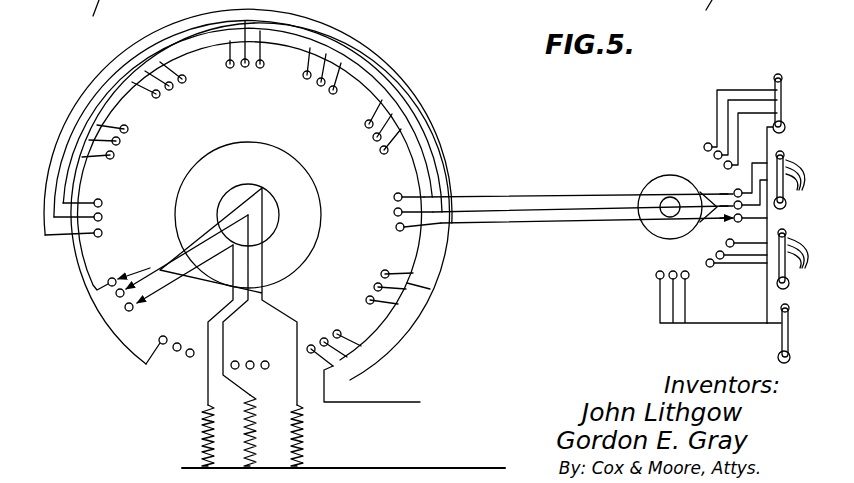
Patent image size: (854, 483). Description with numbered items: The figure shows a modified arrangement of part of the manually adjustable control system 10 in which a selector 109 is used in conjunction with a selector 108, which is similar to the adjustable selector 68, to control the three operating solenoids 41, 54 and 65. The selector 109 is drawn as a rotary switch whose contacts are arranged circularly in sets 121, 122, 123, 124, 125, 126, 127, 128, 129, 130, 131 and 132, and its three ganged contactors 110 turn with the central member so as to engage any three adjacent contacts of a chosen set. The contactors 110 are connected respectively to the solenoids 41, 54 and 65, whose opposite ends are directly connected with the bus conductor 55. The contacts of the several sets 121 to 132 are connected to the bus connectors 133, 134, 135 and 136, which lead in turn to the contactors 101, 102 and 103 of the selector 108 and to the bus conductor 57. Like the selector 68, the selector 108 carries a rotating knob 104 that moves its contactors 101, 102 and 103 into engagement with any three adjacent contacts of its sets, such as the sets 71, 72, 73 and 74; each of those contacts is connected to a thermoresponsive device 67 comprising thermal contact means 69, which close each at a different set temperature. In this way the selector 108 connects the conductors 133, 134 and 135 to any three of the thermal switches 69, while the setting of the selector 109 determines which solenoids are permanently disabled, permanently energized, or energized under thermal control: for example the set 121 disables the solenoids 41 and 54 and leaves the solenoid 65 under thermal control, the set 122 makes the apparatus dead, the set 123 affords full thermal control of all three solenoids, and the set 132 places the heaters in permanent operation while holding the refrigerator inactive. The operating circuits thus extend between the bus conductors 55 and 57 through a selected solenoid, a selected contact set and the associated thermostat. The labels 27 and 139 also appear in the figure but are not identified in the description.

The control system 10 is at (440, 111).
The conductor 27 is at (396, 16).
The operating solenoid 41 is at (196, 435).
The operating solenoid 54 is at (241, 430).
The bus conductor 55 is at (343, 457).
The bus conductor 57 is at (372, 384).
The operating solenoid 65 is at (288, 435).
The thermoresponsive device 67 is at (776, 70).
The adjustable selector 68 is at (789, 238).
The contact means 69 is at (790, 327).
The contact set 71 is at (711, 156).
The contact set 72 is at (735, 192).
The contact set 73 is at (730, 253).
The contact set 74 is at (711, 288).
The contactor 101 is at (730, 133).
The contactor 102 is at (701, 221).
The contactor 103 is at (744, 220).
The rotating knob 104 is at (658, 228).
The selector 108 is at (668, 177).
The selector 109 is at (232, 131).
The contactors 110 is at (150, 299).
The contact set 121 is at (162, 328).
The contact set 122 is at (127, 270).
The contact set 123 is at (106, 216).
The contact set 124 is at (122, 153).
The contact set 125 is at (163, 103).
The contact set 126 is at (226, 79).
The contact set 127 is at (291, 97).
The contact set 128 is at (341, 150).
The contact set 129 is at (357, 217).
The contact set 130 is at (342, 289).
The contact set 131 is at (300, 333).
The contact set 132 is at (232, 352).
The bus connector 133 is at (448, 170).
The bus connector 134 is at (438, 263).
The bus connector 135 is at (102, 330).
The bus connector 136 is at (80, 272).
The conductor ring 139 is at (431, 289).